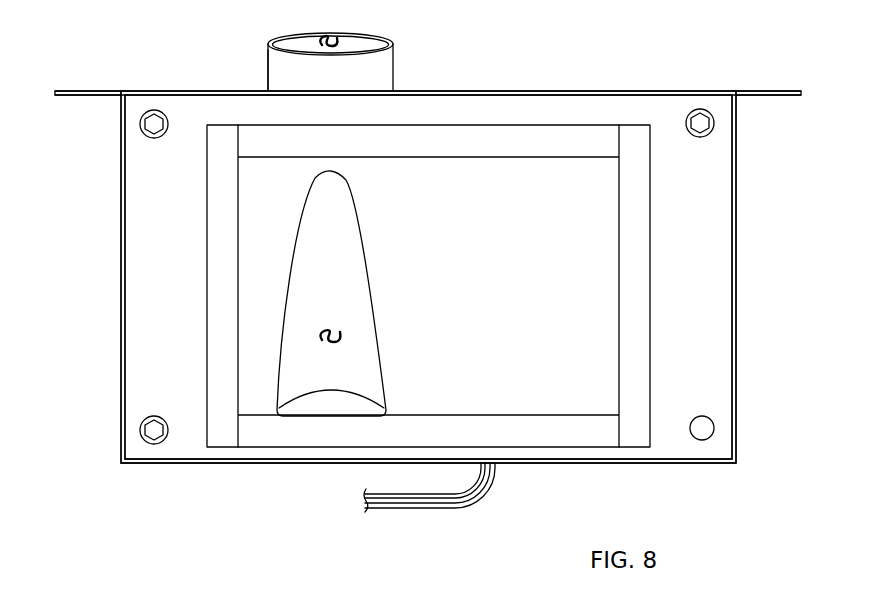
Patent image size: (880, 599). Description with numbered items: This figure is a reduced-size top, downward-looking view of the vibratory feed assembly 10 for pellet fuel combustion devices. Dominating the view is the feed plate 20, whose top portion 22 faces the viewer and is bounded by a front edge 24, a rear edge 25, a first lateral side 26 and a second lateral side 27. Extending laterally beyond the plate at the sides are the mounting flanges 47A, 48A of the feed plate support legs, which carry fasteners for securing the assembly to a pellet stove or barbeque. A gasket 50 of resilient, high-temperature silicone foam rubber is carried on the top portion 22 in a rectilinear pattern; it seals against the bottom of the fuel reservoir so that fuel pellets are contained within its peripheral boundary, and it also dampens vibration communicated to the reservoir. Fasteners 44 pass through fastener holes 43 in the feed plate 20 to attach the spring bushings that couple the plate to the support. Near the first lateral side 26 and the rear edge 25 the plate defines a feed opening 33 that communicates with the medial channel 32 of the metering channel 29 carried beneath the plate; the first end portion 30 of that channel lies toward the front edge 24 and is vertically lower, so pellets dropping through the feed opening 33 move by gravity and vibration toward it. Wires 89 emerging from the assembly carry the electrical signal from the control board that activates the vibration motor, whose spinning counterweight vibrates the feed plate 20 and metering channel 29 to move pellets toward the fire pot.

The vibratory feed assembly 10 is at (517, 475).
The feed plate 20 is at (190, 463).
The top portion 22 is at (442, 302).
The front edge 24 is at (173, 92).
The rear edge 25 is at (582, 463).
The first lateral side 26 is at (733, 231).
The second lateral side 27 is at (123, 265).
The metering channel 29 is at (280, 82).
The first end portion 30 is at (388, 36).
The medial channel 32 is at (331, 36).
The feed opening 33 is at (331, 333).
The fastener holes 43 is at (705, 426).
The fasteners 44 is at (155, 125).
The mounting flange 47A is at (68, 93).
The mounting flange 48A is at (783, 90).
The gasket 50 is at (537, 137).
The wires 89 is at (422, 500).